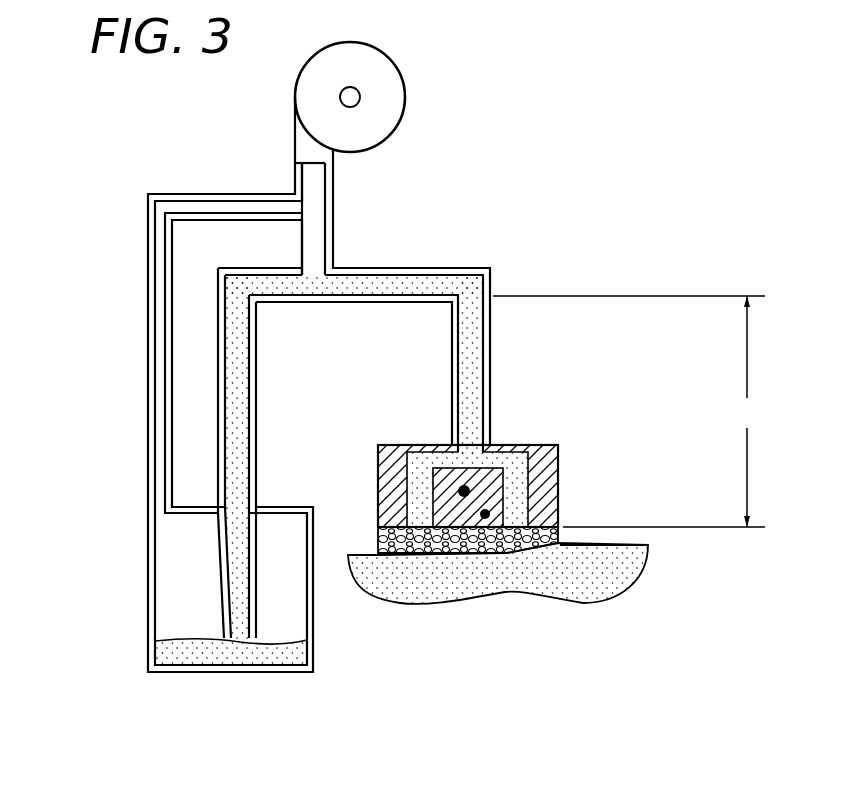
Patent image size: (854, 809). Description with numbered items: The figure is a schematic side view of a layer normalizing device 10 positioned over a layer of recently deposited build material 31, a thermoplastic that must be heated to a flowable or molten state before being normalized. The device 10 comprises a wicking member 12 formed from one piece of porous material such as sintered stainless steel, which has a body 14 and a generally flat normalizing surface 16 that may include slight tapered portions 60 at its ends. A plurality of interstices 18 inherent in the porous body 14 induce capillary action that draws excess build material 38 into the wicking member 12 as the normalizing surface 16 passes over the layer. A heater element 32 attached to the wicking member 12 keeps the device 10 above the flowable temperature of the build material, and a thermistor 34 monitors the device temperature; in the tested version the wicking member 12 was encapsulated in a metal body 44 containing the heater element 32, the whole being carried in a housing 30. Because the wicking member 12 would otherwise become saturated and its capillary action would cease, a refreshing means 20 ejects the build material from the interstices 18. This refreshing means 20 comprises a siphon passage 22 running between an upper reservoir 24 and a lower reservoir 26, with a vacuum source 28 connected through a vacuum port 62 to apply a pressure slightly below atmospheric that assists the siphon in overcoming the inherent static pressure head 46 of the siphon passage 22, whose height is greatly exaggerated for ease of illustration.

The layer normalizing device 10 is at (624, 199).
The wicking member 12 is at (614, 514).
The body 14 is at (438, 565).
The normalizing surface 16 is at (500, 555).
The interstices 18 is at (535, 548).
The refreshing means 20 is at (470, 213).
The siphon passage 22 is at (356, 298).
The upper reservoir 24 is at (423, 468).
The lower reservoir 26 is at (277, 623).
The vacuum source 28 is at (408, 96).
The housing 30 is at (438, 445).
The layer of recently deposited build material 31 is at (632, 542).
The heater element 32 is at (469, 487).
The thermistor 34 is at (557, 466).
The excess build material 38 is at (233, 407).
The metal body 44 is at (378, 495).
The static pressure head 46 is at (629, 411).
The tapered portion 60 is at (388, 558).
The vacuum port 62 is at (313, 218).